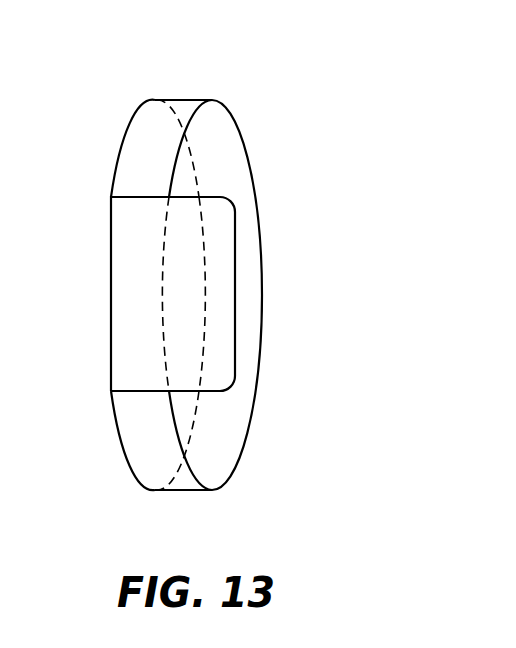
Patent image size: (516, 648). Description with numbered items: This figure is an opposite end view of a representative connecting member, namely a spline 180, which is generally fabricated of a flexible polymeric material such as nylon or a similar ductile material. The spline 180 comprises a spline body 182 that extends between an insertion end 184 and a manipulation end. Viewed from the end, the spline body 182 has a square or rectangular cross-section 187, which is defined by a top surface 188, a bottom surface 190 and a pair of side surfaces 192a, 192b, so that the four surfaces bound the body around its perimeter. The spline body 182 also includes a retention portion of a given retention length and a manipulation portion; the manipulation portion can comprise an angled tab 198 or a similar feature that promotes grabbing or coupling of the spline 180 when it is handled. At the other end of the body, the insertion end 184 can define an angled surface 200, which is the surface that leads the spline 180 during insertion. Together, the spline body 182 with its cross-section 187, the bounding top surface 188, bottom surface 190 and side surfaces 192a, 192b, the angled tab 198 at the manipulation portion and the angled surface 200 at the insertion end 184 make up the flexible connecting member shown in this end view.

The spline 180 is at (288, 92).
The angled tab 198 is at (263, 240).
The top surface 188 is at (235, 303).
The insertion end 184 is at (137, 282).
The bottom surface 190 is at (109, 358).
The side surface 192b is at (137, 193).
The side surface 192a is at (142, 393).
The spline body 182 is at (235, 357).
The cross-section 187 is at (229, 391).
The angled surface 200 is at (218, 453).